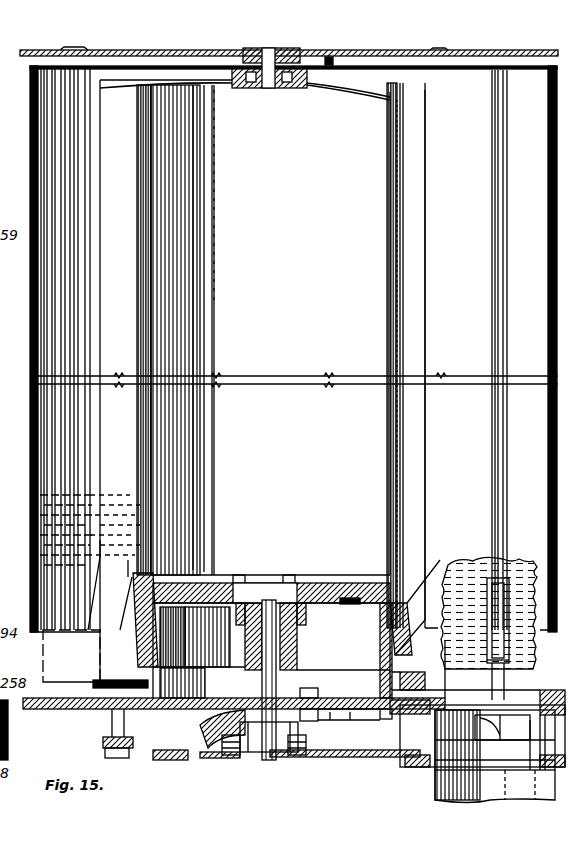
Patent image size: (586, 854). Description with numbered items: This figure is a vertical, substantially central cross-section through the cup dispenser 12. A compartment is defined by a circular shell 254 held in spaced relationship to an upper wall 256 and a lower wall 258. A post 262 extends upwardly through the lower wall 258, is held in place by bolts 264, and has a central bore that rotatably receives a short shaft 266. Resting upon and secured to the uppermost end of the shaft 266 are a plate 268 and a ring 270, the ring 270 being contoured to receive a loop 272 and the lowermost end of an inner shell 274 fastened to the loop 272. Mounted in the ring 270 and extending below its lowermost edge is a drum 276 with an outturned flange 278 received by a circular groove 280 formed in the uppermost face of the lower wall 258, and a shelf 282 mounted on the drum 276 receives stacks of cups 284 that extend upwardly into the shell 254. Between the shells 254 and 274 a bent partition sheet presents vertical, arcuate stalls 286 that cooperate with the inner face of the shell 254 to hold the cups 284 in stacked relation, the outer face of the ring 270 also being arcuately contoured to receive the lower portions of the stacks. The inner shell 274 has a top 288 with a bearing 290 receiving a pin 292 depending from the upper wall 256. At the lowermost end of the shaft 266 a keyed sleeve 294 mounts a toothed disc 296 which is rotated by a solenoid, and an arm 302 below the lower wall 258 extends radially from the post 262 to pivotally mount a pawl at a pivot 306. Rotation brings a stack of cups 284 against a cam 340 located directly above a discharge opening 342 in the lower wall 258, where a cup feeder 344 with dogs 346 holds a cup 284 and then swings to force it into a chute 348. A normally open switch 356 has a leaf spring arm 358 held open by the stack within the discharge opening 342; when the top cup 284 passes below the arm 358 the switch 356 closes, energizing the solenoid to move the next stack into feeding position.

The cup dispenser 12 is at (252, 182).
The circular shell 254 is at (548, 196).
The upper wall 256 is at (488, 56).
The lower wall 258 is at (56, 709).
The post 262 is at (292, 664).
The bolts 264 is at (310, 697).
The short shaft 266 is at (262, 672).
The plate 268 is at (210, 592).
The ring 270 is at (157, 578).
The loop 272 is at (246, 538).
The inner shell 274 is at (378, 306).
The drum 276 is at (190, 648).
The outturned flange 278 is at (182, 683).
The circular groove 280 is at (368, 710).
The shelf 282 is at (109, 709).
The cups 284 is at (56, 658).
The stalls 286 is at (416, 436).
The top 288 is at (344, 93).
The bearing 290 is at (263, 88).
The pin 292 is at (271, 58).
The sleeve 294 is at (258, 764).
The disc 296 is at (329, 758).
The arm 302 is at (221, 758).
The pivot 306 is at (164, 760).
The cam 340 is at (378, 672).
The discharge opening 342 is at (520, 690).
The cup feeder 344 is at (492, 716).
The dogs 346 is at (488, 737).
The chute 348 is at (538, 790).
The switch 356 is at (518, 590).
The leaf spring arm 358 is at (512, 658).